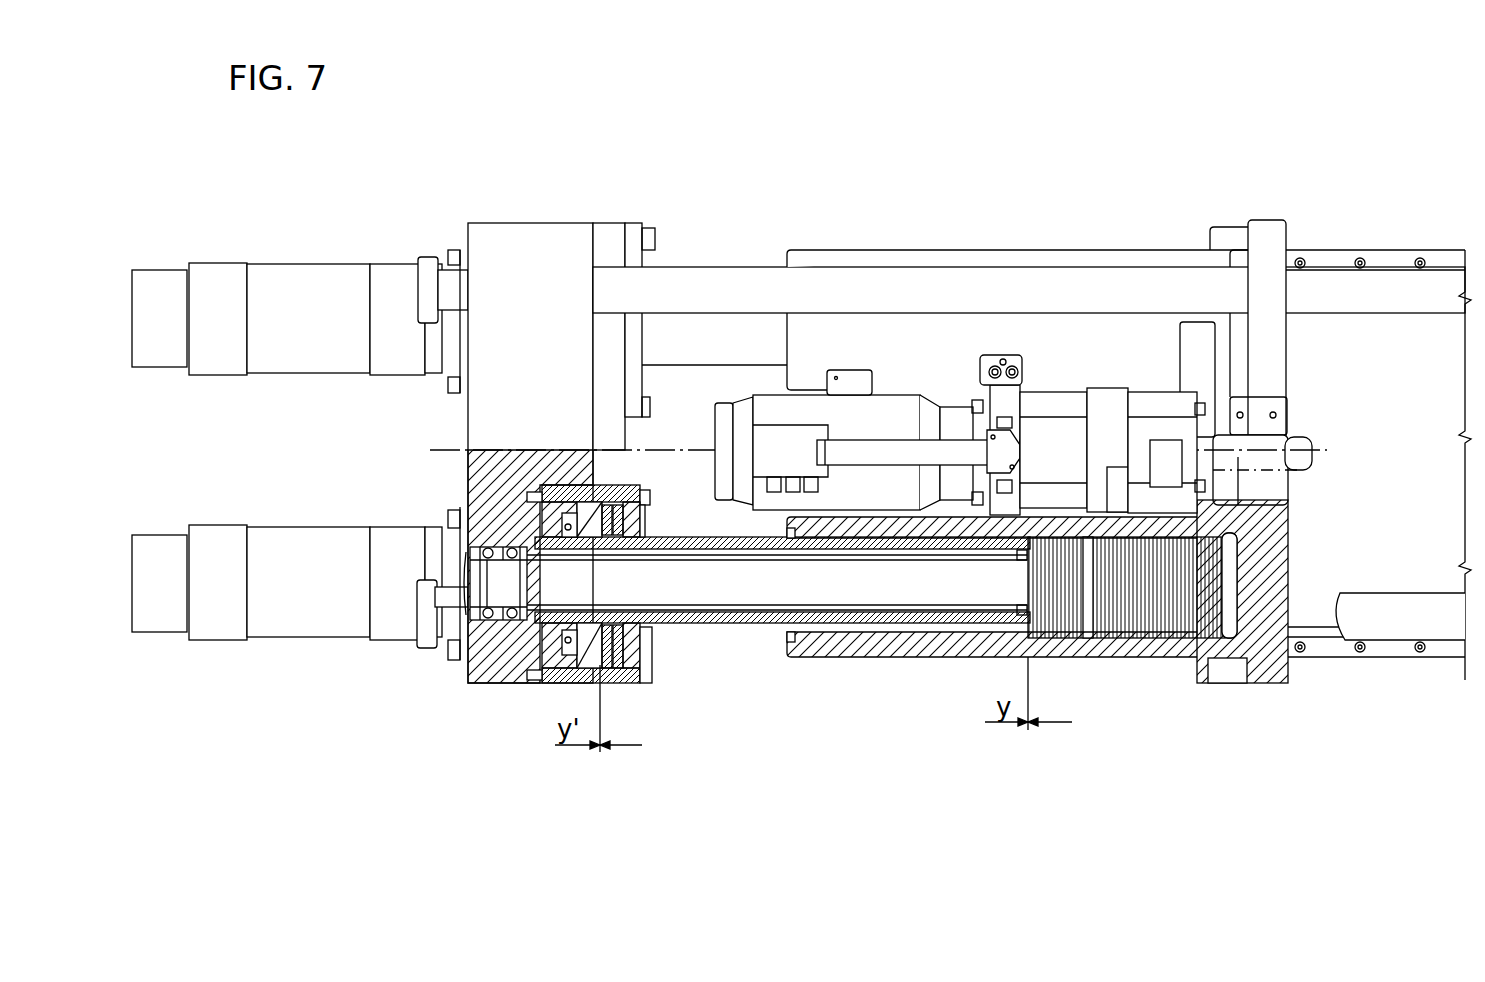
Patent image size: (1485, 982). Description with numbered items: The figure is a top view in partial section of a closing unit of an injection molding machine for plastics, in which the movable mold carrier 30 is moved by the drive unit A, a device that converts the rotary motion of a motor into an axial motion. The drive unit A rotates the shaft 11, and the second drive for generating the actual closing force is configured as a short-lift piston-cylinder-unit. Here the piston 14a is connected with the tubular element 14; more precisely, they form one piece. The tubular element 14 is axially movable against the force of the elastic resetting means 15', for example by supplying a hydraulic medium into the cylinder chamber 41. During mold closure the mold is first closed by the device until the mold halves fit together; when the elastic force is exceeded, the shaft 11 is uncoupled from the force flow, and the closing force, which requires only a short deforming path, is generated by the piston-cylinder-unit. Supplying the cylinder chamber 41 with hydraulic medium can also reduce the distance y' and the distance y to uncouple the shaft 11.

The tubular element 14 is at (753, 627).
The piston 14a is at (580, 663).
The shaft 11 is at (867, 588).
The movable mold carrier 30 is at (1258, 537).
The elastic resetting means 15' is at (651, 543).
The cylinder chamber 41 is at (567, 528).
The drive unit A is at (895, 393).